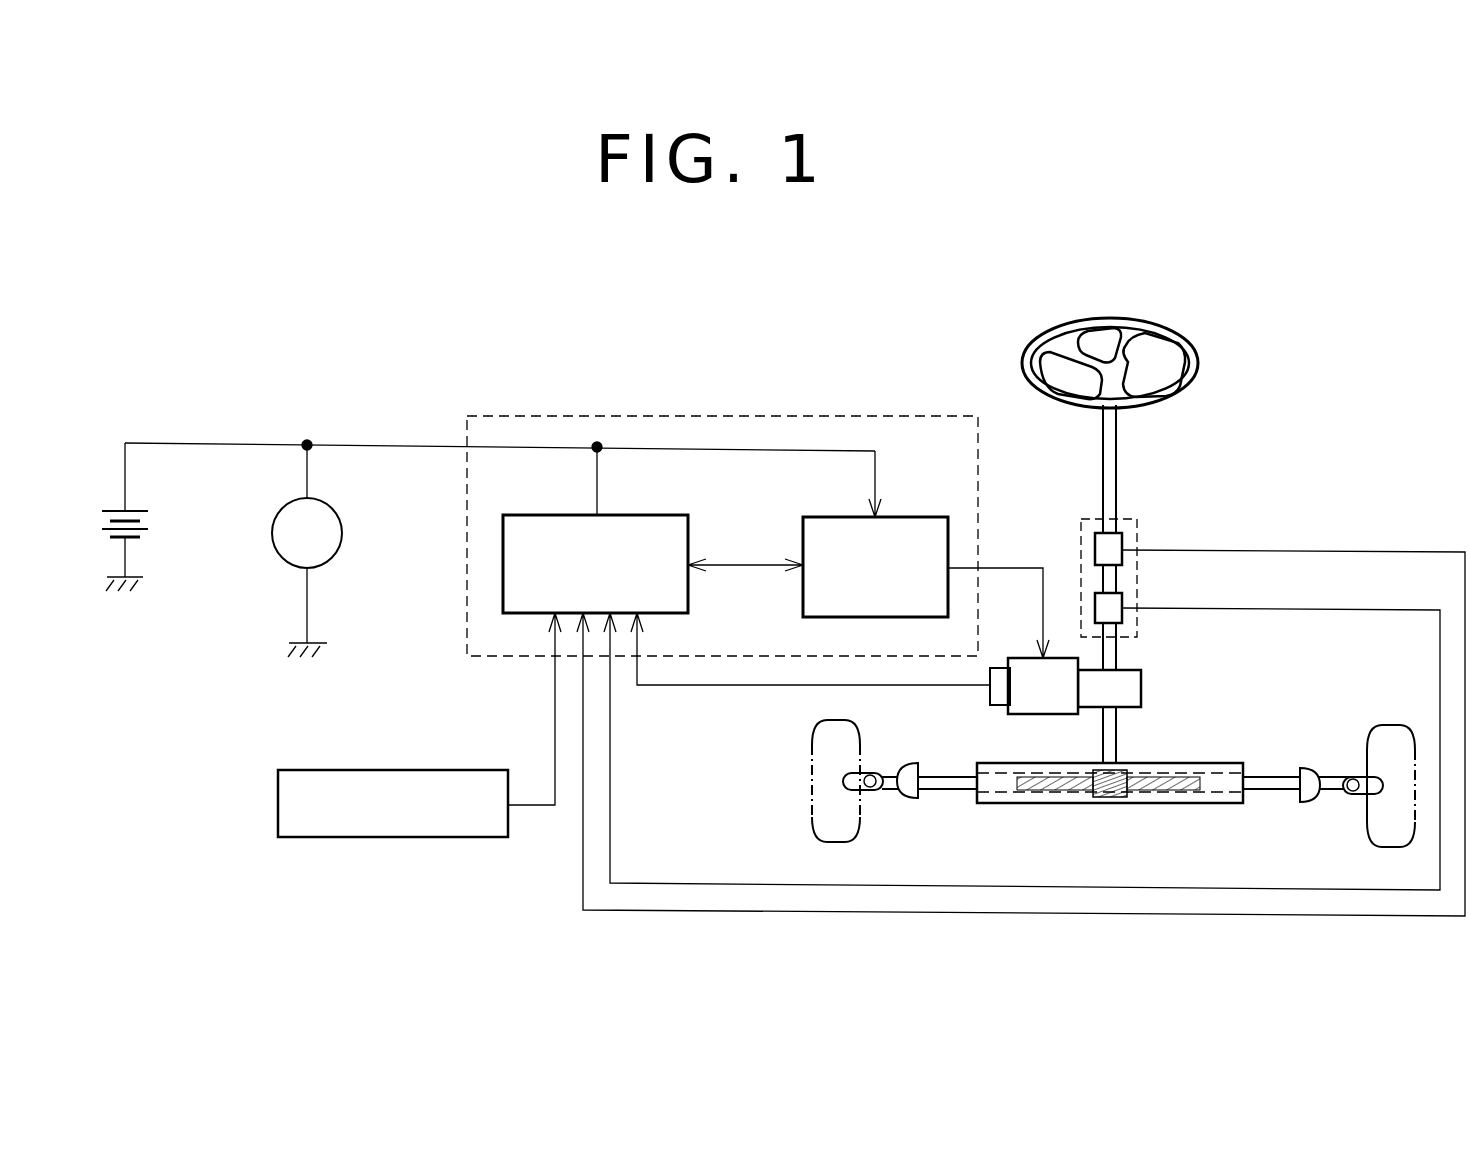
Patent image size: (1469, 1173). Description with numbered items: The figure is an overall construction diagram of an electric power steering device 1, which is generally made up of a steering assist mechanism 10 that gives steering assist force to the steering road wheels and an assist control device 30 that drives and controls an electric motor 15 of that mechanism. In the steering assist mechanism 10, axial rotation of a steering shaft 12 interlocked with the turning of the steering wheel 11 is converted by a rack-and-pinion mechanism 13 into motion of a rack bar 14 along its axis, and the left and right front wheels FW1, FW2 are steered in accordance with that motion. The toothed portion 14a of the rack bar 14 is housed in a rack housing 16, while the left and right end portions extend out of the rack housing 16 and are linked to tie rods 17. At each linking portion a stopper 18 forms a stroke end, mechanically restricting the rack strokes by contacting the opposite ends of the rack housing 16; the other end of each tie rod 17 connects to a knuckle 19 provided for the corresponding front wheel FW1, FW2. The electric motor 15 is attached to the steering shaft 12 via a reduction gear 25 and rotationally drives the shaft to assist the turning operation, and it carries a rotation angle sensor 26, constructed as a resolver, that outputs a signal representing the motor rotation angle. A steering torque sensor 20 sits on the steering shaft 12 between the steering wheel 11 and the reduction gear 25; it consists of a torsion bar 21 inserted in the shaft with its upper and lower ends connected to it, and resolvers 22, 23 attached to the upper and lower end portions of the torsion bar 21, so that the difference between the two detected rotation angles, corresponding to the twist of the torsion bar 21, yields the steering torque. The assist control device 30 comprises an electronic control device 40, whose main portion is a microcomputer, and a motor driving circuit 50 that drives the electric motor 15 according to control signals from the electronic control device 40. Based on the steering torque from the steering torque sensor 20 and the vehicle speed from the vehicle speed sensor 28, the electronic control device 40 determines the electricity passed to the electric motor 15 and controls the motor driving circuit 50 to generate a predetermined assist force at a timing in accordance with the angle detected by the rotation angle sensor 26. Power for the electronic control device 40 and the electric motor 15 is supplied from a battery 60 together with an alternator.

The electric power steering device 1 is at (930, 300).
The steering assist mechanism 10 is at (1318, 667).
The steering wheel 11 is at (1197, 360).
The steering shaft 12 is at (1117, 447).
The rack-and-pinion mechanism 13 is at (1120, 764).
The rack bar 14 is at (1277, 778).
The toothed portion 14a is at (1170, 793).
The electric motor 15 is at (1045, 714).
The rack housing 16 is at (1040, 803).
The tie rod 17 is at (883, 790).
The stopper 18 is at (916, 798).
The knuckle 19 is at (858, 773).
The steering torque sensor 20 is at (1146, 559).
The torsion bar 21 is at (1116, 577).
The resolver 22 is at (1122, 545).
The resolver 23 is at (1122, 615).
The reduction gear 25 is at (1141, 688).
The rotation angle sensor 26 is at (990, 693).
The vehicle speed sensor 28 is at (450, 770).
The assist control device 30 is at (676, 417).
The electronic control device 40 is at (640, 515).
The motor driving circuit 50 is at (900, 517).
The battery 60 is at (140, 511).
The front wheel FW1 is at (1391, 725).
The front wheel FW2 is at (812, 782).